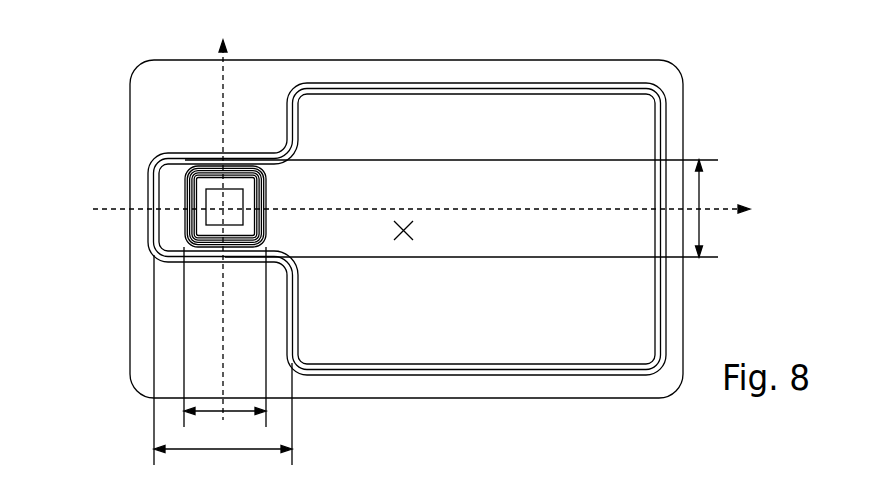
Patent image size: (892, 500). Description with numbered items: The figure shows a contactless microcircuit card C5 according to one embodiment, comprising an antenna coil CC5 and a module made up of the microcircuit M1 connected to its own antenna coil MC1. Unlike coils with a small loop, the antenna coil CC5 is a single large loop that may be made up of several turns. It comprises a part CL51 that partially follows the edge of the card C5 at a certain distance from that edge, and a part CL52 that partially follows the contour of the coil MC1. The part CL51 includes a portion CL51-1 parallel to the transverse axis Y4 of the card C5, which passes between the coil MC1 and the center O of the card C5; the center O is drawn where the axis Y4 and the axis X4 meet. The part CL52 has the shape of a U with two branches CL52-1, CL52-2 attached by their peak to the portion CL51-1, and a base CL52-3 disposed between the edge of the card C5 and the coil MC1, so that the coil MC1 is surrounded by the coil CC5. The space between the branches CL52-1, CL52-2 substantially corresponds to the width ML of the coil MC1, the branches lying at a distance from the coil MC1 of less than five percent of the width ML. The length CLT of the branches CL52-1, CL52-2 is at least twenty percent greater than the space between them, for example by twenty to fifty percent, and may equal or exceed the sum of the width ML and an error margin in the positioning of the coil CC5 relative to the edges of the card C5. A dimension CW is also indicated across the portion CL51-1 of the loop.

The contactless microcircuit card C5 is at (130, 80).
The antenna coil CC5 is at (667, 80).
The part of the antenna coil following the card edge CL51 is at (547, 84).
The part parallel to the transverse axis CL51-1 is at (300, 133).
The part of the antenna coil following the module coil contour CL52 is at (158, 279).
The first branch of the U-shaped part CL52-1 is at (230, 163).
The second branch of the U-shaped part CL52-2 is at (207, 250).
The base of the U-shaped part CL52-3 is at (160, 220).
The module antenna coil MC1 is at (186, 174).
The microcircuit M1 is at (200, 220).
The transverse axis of the card Y4 is at (224, 218).
The X axis X4 is at (436, 210).
The center of the card O is at (403, 241).
The coil width CW is at (464, 208).
The width of the module coil ML is at (225, 344).
The length of the branches CLT is at (223, 366).